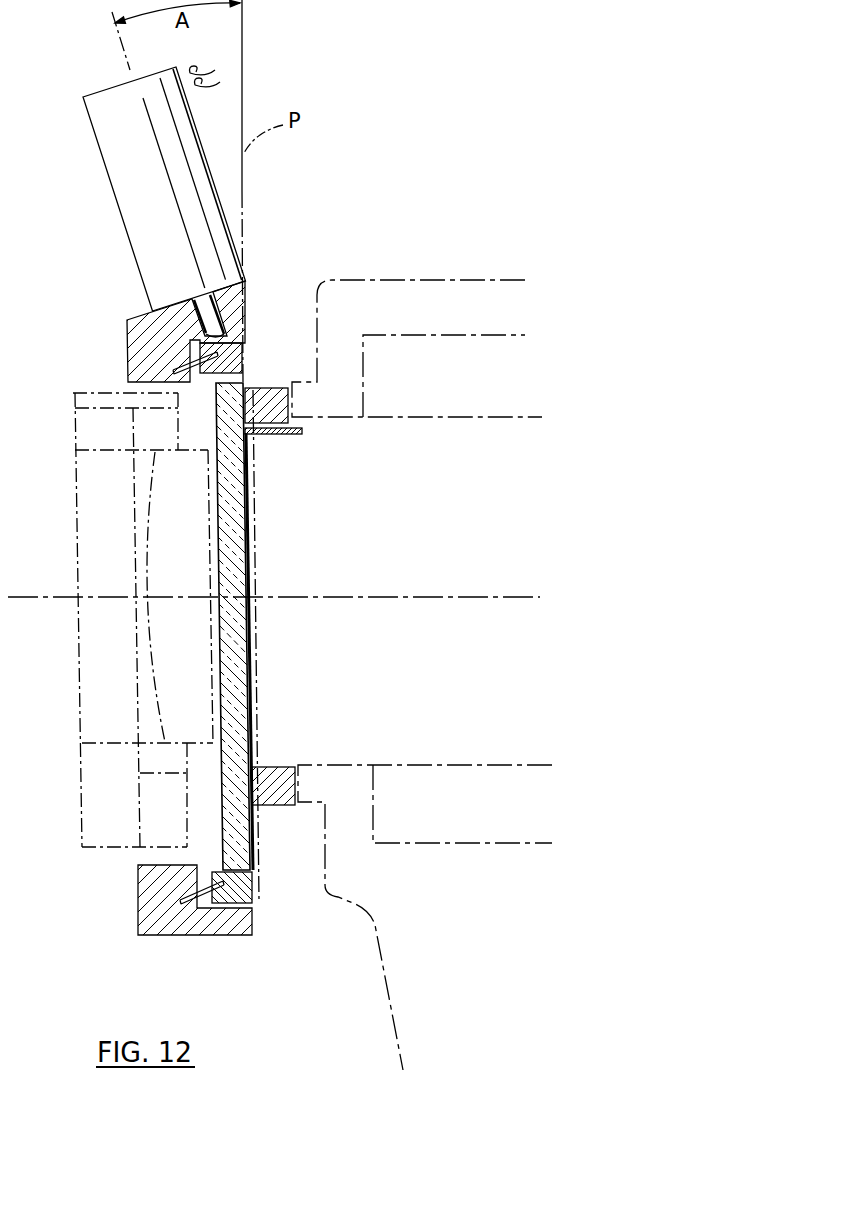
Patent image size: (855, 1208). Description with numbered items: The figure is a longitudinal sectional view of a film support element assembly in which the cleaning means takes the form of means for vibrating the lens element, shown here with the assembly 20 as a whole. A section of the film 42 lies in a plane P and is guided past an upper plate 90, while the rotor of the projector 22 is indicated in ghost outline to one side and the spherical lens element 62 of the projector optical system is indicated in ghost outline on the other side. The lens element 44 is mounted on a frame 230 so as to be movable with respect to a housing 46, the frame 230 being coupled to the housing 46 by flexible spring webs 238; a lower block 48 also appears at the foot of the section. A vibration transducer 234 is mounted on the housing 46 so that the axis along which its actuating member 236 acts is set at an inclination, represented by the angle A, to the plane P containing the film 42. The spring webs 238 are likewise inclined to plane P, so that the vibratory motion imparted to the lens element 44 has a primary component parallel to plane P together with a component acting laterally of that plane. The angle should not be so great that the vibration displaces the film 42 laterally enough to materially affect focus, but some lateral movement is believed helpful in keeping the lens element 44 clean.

The modular assembly 20 is at (277, 193).
The rotor of the projector 22 is at (402, 279).
The film 42 is at (247, 480).
The lens element 44 is at (240, 577).
The housing 46 is at (125, 333).
The lower support block 48 is at (253, 840).
The spherical lens element 62 is at (175, 543).
The upper plate 90 is at (286, 437).
The frame 230 is at (252, 890).
The vibration transducer 234 is at (118, 163).
The actuating member 236 is at (212, 318).
The flexible spring webs 238 is at (197, 378).